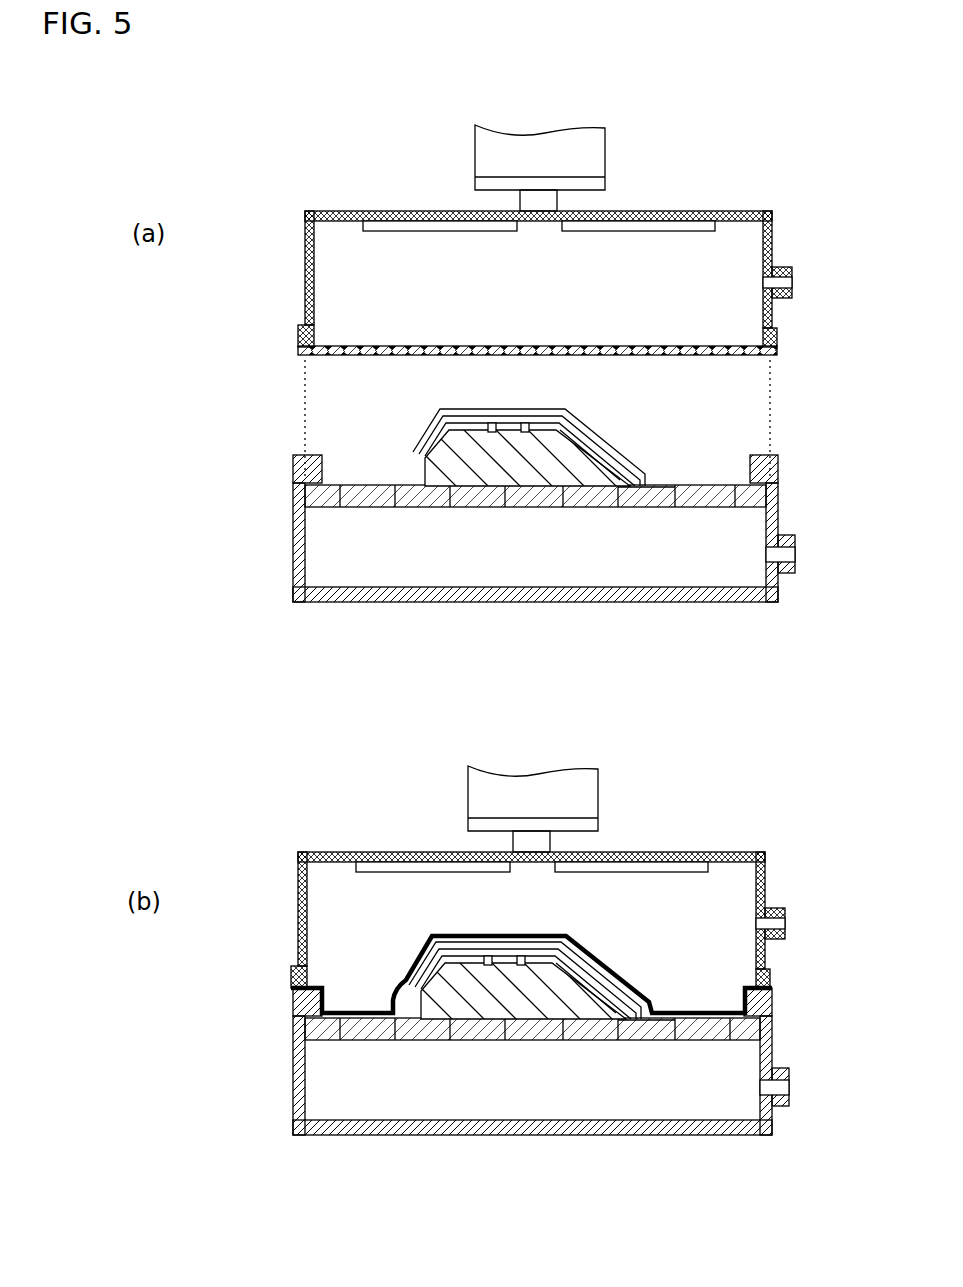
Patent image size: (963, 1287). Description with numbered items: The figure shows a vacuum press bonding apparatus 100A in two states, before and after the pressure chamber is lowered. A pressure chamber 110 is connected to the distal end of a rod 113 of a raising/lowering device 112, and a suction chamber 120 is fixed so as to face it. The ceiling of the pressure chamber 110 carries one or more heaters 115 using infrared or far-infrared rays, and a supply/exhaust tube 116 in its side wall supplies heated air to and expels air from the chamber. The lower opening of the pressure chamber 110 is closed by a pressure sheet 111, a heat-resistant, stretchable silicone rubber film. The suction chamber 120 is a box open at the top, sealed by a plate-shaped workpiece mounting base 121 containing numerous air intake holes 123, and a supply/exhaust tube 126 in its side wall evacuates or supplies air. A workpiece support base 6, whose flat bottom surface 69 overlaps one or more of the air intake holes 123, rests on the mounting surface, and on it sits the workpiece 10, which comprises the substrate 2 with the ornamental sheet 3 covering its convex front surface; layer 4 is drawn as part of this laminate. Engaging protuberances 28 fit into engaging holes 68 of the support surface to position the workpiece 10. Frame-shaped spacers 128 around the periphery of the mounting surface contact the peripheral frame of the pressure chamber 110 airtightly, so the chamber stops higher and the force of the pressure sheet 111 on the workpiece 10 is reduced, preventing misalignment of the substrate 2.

The vacuum press bonding apparatus 100A is at (398, 182).
The raising/lowering device 112 is at (618, 146).
The rod 113 is at (556, 204).
The pressure chamber 110 is at (296, 278).
The heaters 115 is at (430, 232).
The supply/exhaust tube 116 is at (793, 283).
The pressure sheet 111 is at (370, 352).
The suction chamber 120 is at (292, 552).
The frame-shaped spacers 128 is at (295, 458).
The supply/exhaust tube 126 is at (796, 548).
The workpiece mounting base 121 is at (428, 506).
The air intake holes 123 is at (682, 508).
The workpiece support base 6 is at (545, 462).
The bottom surface 69 is at (590, 480).
The workpiece 10 is at (545, 691).
The substrate 2 is at (635, 460).
The ornamental sheet 3 is at (528, 702).
The second layer 4 is at (605, 445).
The engaging protuberances 28 is at (490, 420).
The engaging holes 68 is at (525, 421).